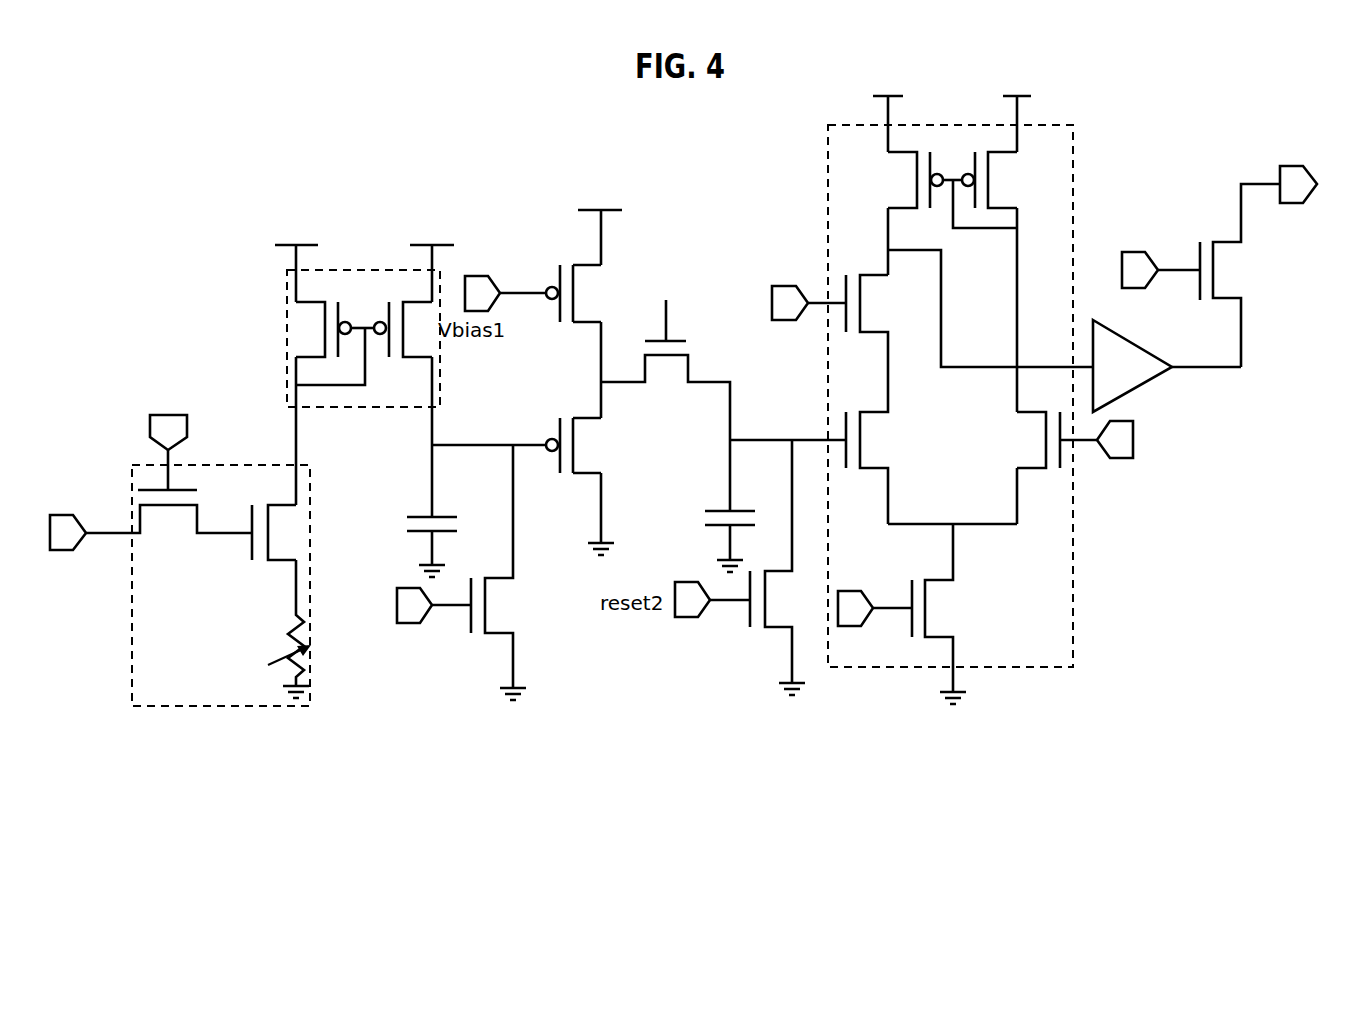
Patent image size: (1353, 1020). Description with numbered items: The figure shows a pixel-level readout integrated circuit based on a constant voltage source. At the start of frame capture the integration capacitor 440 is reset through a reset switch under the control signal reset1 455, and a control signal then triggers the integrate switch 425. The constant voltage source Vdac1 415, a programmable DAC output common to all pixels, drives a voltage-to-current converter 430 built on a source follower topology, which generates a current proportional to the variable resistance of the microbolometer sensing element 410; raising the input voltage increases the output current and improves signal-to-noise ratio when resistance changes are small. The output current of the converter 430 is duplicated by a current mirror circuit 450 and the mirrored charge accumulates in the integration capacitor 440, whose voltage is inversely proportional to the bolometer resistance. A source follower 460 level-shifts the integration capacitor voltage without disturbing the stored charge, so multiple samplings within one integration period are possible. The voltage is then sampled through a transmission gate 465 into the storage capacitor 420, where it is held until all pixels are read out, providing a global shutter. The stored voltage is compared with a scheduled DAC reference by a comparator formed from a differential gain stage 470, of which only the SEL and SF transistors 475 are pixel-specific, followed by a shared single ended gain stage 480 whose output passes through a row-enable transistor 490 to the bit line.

The microbolometer sensing element 410 is at (298, 668).
The constant voltage source Vdac1 415 is at (92, 588).
The storage capacitor Cstore 420 is at (706, 497).
The integrate switch 425 is at (160, 396).
The voltage-to-current converter (V2I) 430 is at (150, 712).
The integration capacitor Cint 440 is at (381, 507).
The current mirror circuit 450 is at (287, 282).
The reset1 control signal 455 is at (420, 625).
The source follower 460 is at (559, 420).
The transmission gate 465 is at (663, 272).
The differential gain stage 470 is at (1075, 667).
The SEL and SF transistors 475 is at (893, 312).
The single ended gain stage 480 is at (1170, 372).
The row enable transistor 490 is at (1208, 238).